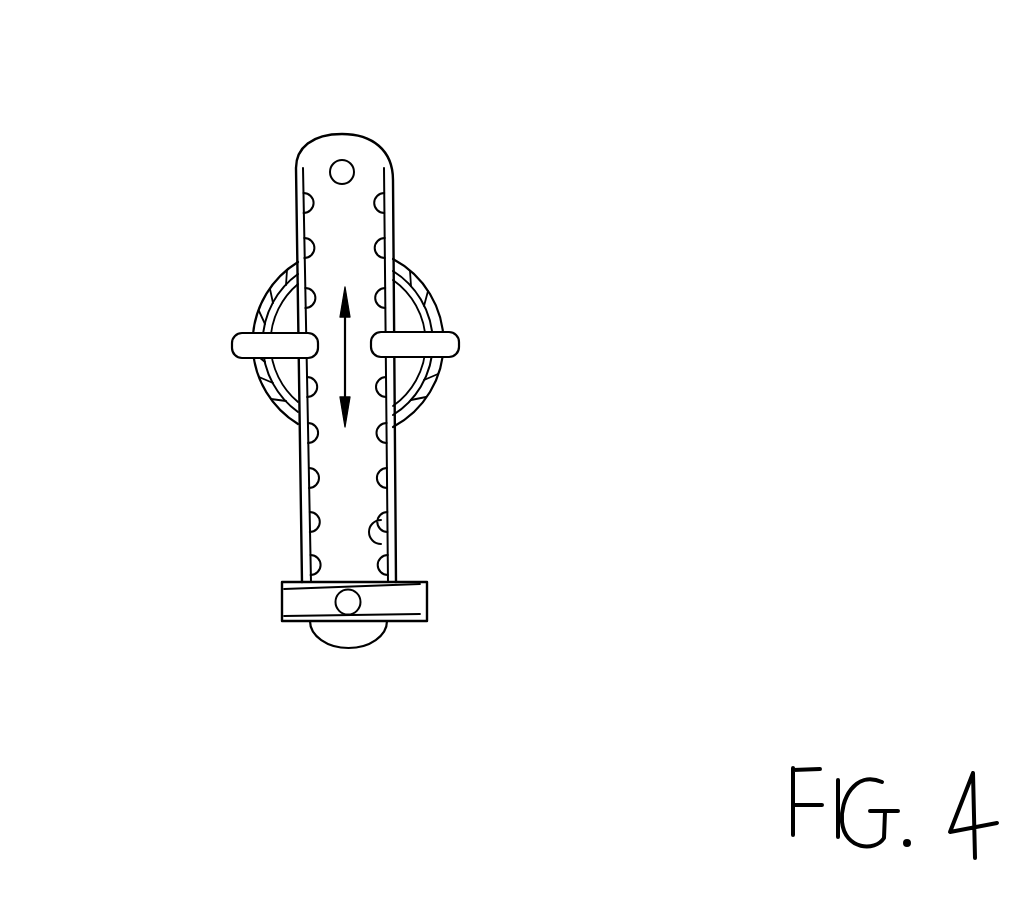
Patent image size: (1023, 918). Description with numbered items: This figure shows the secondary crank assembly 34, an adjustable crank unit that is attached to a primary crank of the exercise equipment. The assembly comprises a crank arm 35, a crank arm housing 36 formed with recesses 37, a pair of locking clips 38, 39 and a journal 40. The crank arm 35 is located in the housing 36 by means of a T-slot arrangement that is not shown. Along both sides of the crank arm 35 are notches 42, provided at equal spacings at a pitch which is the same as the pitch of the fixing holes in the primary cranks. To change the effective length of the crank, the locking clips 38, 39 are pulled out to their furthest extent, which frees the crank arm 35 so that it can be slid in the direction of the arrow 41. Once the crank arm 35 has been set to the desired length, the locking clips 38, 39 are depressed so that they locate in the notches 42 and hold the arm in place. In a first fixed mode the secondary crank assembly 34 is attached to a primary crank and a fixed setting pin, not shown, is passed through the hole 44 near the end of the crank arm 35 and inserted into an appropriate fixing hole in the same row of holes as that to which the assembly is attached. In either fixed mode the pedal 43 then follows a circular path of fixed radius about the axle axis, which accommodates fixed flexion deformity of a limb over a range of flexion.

The secondary crank assembly 34 is at (399, 358).
The crank arm 35 is at (298, 297).
The crank arm housing 36 is at (284, 355).
The recesses 37 is at (418, 323).
The locking clip 38 is at (186, 327).
The locking clip 39 is at (505, 365).
The journal 40 is at (286, 292).
The arrow 41 is at (269, 406).
The notches 42 is at (430, 384).
The pedal 43 is at (324, 664).
The hole 44 is at (426, 138).